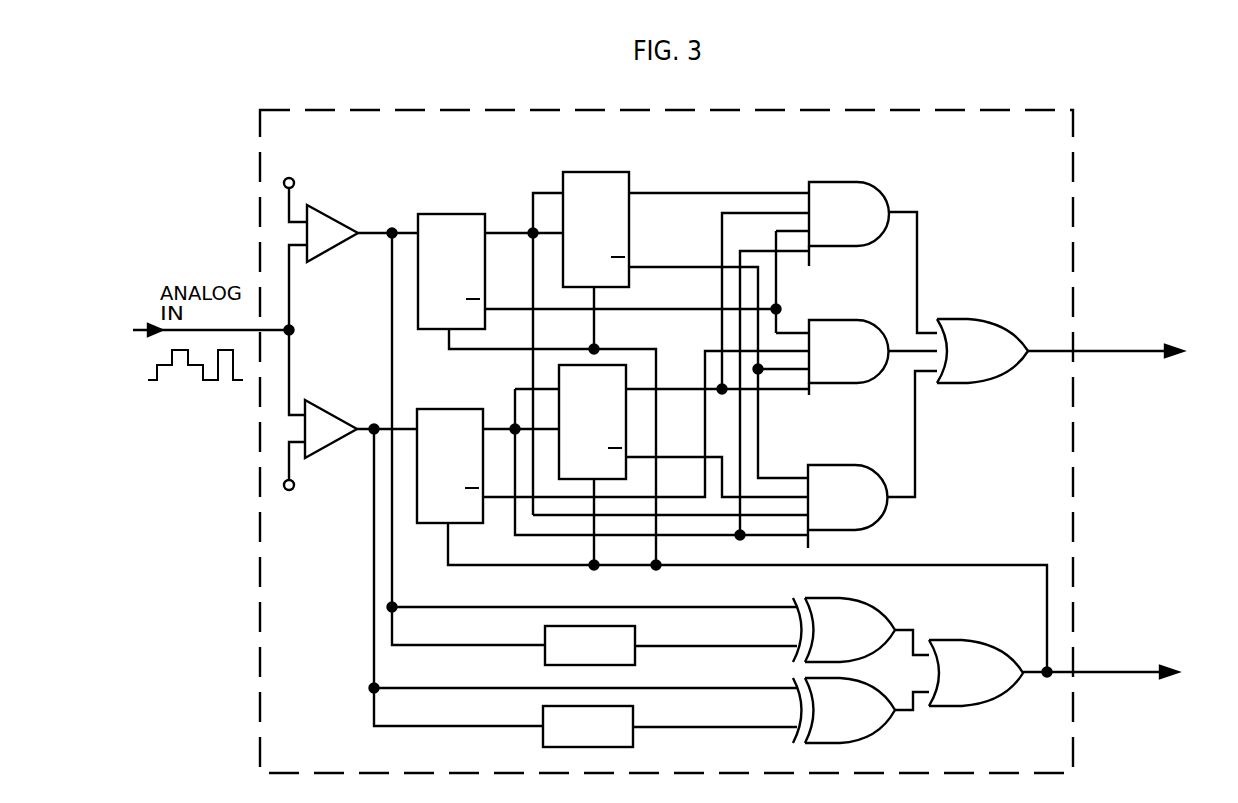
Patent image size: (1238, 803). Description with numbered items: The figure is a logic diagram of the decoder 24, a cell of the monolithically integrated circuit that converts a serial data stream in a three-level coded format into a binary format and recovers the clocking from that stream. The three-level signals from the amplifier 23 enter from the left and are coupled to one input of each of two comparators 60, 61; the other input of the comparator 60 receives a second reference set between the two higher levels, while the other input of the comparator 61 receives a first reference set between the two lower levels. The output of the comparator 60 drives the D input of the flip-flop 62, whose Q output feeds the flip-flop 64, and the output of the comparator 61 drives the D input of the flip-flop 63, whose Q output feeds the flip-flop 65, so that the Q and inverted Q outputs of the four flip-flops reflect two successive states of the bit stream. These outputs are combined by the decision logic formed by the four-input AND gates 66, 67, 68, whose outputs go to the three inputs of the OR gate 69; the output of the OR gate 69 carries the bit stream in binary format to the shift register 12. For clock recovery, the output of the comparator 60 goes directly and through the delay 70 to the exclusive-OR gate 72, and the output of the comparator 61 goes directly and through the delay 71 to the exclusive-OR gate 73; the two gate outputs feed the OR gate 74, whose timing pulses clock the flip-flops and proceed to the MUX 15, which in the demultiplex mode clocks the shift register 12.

The decoder 24 is at (729, 143).
The amplifier 23 is at (183, 343).
The shift register 12 is at (1121, 352).
The MUX 15 is at (1117, 674).
The comparator 60 is at (333, 254).
The comparator 61 is at (334, 408).
The flip-flop 62 is at (461, 279).
The flip-flop 63 is at (460, 474).
The flip-flop 64 is at (607, 237).
The flip-flop 65 is at (604, 428).
The AND gate 66 is at (860, 223).
The AND gate 67 is at (860, 362).
The AND gate 68 is at (859, 508).
The OR gate 69 is at (1075, 342).
The delay 70 is at (545, 657).
The delay 71 is at (543, 739).
The exclusive-OR gate 72 is at (857, 641).
The exclusive-OR gate 73 is at (857, 721).
The OR gate 74 is at (1070, 665).